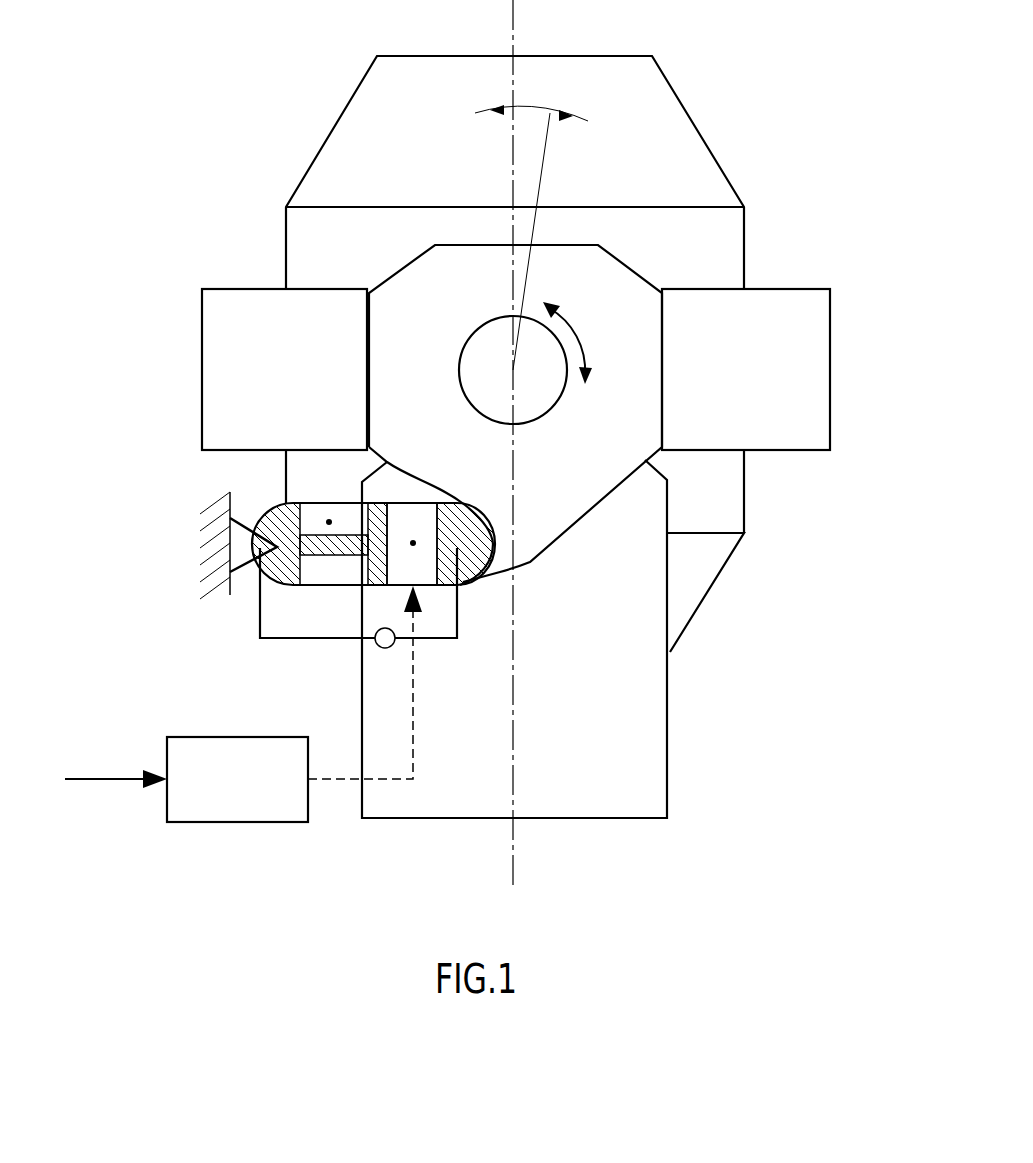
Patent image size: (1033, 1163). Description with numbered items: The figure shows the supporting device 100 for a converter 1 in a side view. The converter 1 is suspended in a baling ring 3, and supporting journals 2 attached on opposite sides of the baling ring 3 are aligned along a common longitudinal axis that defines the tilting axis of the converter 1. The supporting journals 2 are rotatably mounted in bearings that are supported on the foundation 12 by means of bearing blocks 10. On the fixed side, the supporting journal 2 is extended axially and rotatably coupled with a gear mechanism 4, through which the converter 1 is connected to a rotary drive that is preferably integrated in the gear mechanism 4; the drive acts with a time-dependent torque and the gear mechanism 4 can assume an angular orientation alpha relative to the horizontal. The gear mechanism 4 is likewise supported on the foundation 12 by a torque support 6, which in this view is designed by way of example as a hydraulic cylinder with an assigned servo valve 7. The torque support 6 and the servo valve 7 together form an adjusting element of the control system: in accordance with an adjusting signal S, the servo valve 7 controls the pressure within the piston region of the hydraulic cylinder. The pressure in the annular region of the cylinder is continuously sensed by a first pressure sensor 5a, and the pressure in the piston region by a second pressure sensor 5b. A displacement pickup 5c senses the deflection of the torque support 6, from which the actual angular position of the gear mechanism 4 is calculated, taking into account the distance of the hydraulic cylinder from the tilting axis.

The supporting device 100 is at (135, 463).
The converter 1 is at (653, 115).
The supporting journals 2 is at (425, 254).
The baling ring 3 is at (755, 308).
The gear mechanism 4 is at (408, 287).
The first pressure sensor 5a is at (329, 522).
The second pressure sensor 5b is at (383, 477).
The displacement pickup 5c is at (347, 664).
The torque support 6 is at (365, 535).
The servo valve 7 is at (203, 757).
The bearing blocks 10 is at (620, 723).
The foundation 12 is at (213, 557).